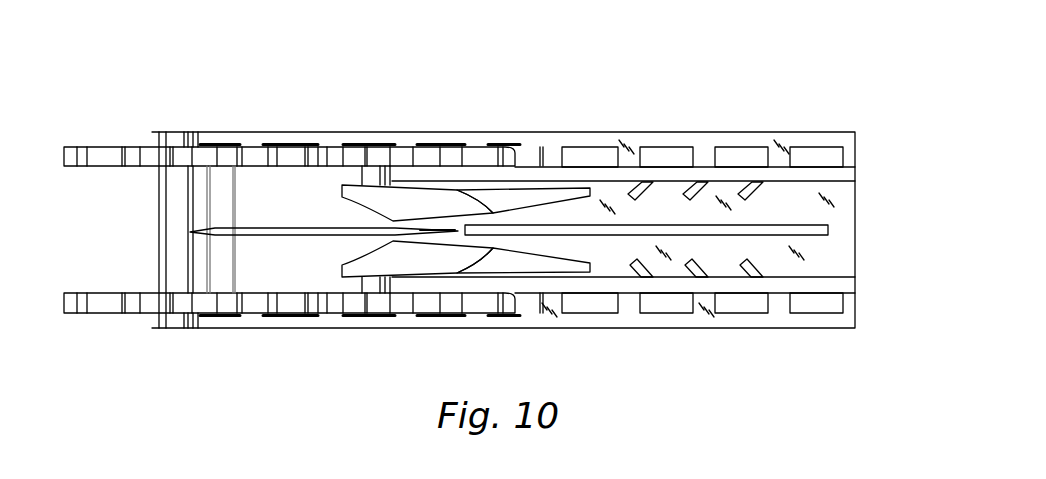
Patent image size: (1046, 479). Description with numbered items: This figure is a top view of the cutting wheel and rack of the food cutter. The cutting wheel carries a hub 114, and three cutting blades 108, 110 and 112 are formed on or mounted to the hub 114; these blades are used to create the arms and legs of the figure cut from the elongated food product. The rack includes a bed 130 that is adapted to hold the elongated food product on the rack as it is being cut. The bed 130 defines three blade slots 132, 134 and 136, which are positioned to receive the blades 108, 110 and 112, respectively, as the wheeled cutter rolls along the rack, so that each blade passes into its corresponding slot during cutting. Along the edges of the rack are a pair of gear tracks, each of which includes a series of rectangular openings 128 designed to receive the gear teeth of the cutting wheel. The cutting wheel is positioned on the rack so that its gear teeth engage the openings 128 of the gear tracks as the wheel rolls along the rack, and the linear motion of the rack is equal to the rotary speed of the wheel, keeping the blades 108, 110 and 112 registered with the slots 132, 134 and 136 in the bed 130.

The cutting blade 108 is at (402, 263).
The cutting blade 110 is at (405, 200).
The cutting blade 112 is at (312, 227).
The hub 114 is at (268, 185).
The rectangular openings 128 is at (767, 157).
The bed 130 is at (840, 203).
The blade slot 132 is at (570, 268).
The blade slot 134 is at (523, 198).
The blade slot 136 is at (793, 228).